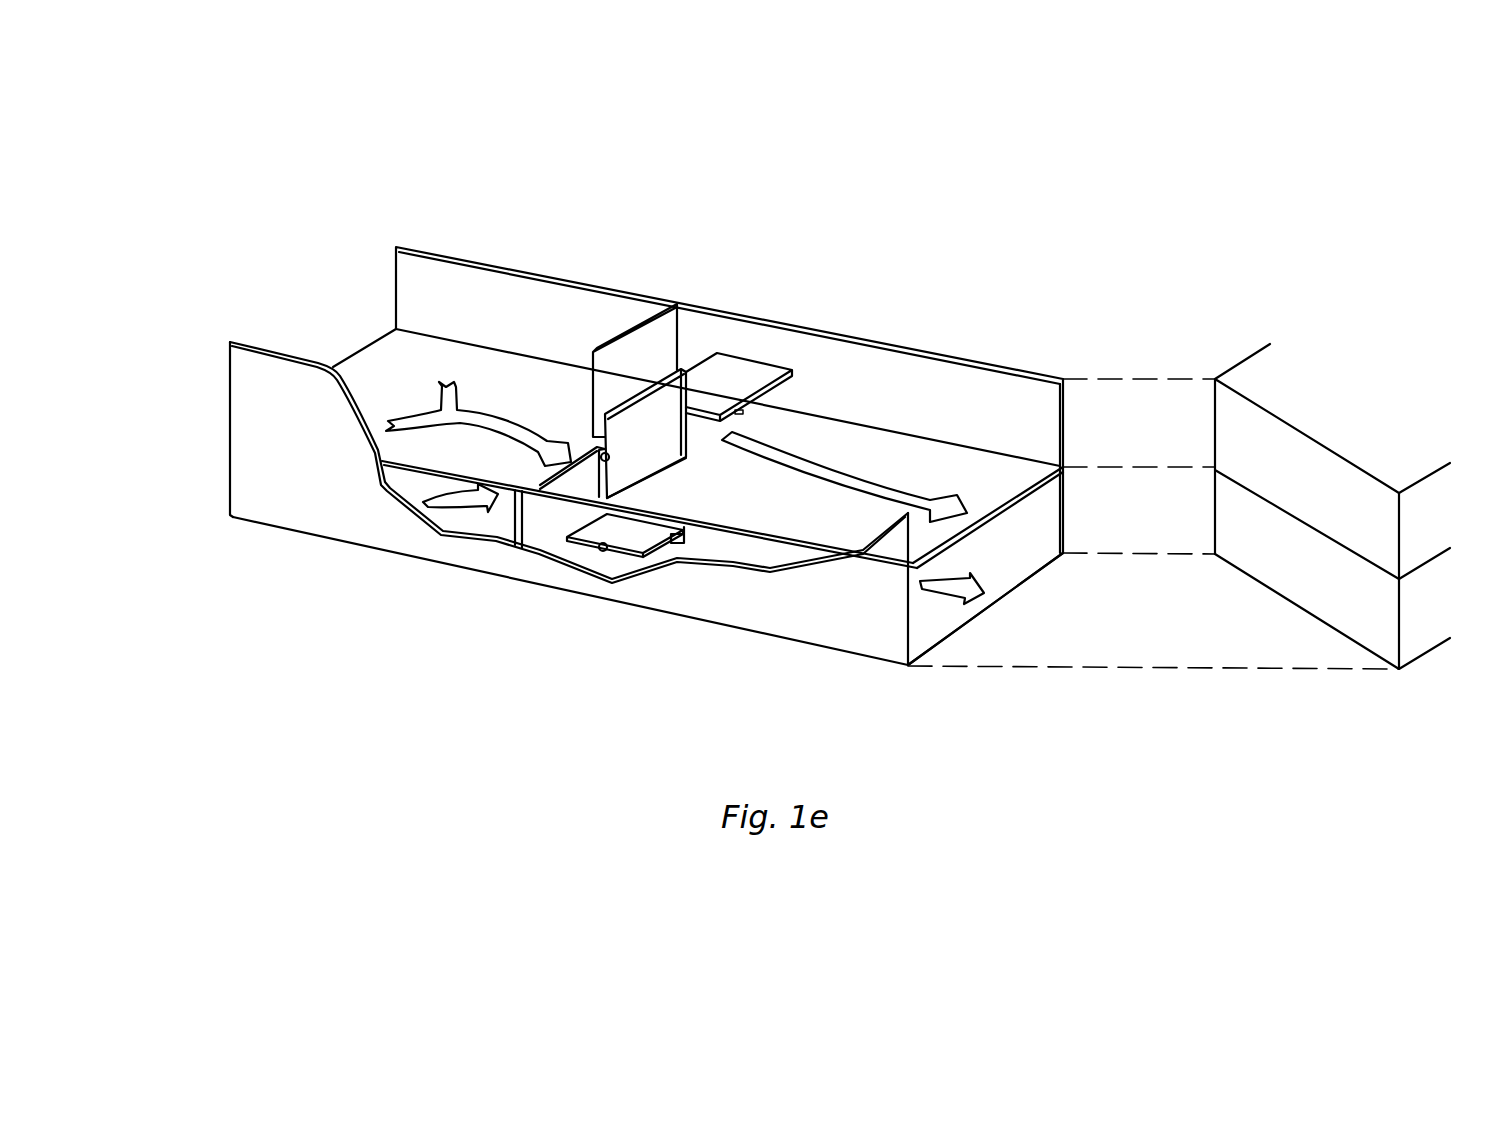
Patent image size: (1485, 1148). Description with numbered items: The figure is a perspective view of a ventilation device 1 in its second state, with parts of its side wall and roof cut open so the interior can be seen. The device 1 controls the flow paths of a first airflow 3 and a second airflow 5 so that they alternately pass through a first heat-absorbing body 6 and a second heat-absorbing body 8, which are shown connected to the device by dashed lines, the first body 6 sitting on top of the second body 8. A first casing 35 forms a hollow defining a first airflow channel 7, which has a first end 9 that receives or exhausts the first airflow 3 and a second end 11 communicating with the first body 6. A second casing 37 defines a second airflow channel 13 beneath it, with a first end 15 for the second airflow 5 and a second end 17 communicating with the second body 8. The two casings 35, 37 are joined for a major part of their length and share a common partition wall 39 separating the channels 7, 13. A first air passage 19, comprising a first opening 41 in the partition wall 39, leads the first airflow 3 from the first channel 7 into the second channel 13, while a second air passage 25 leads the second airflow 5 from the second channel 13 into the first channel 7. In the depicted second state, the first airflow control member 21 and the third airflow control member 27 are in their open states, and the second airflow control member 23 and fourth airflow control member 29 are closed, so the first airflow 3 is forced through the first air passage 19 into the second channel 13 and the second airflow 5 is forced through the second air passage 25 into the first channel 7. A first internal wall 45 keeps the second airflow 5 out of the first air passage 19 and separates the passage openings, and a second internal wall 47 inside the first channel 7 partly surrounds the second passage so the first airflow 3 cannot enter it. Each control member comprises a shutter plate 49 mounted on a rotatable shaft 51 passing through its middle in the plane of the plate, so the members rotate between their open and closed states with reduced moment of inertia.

The ventilation device 1 is at (272, 492).
The first airflow 3 is at (441, 382).
The second airflow 5 is at (430, 497).
The first heat-absorbing body 6 is at (1245, 445).
The first airflow channel 7 is at (541, 326).
The second heat-absorbing body 8 is at (1330, 590).
The first end of first airflow channel 9 is at (338, 329).
The second end of first airflow channel 11 is at (943, 400).
The second airflow channel 13 is at (483, 517).
The first end of second airflow channel 15 is at (222, 483).
The second end of second airflow channel 17 is at (931, 628).
The first air passage 19 is at (598, 484).
The first airflow control member 21 is at (638, 541).
The second airflow control member 23 is at (627, 425).
The second air passage 25 is at (698, 337).
The third airflow control member 27 is at (763, 373).
The fourth airflow control member 29 is at (687, 538).
The first casing 35 is at (418, 289).
The second casing 37 is at (860, 602).
The partition wall 39 is at (1013, 477).
The first opening 41 is at (583, 478).
The first internal wall 45 is at (535, 525).
The second internal wall 47 is at (650, 380).
The shutter plate 49 is at (653, 455).
The rotatable shaft 51 is at (665, 423).